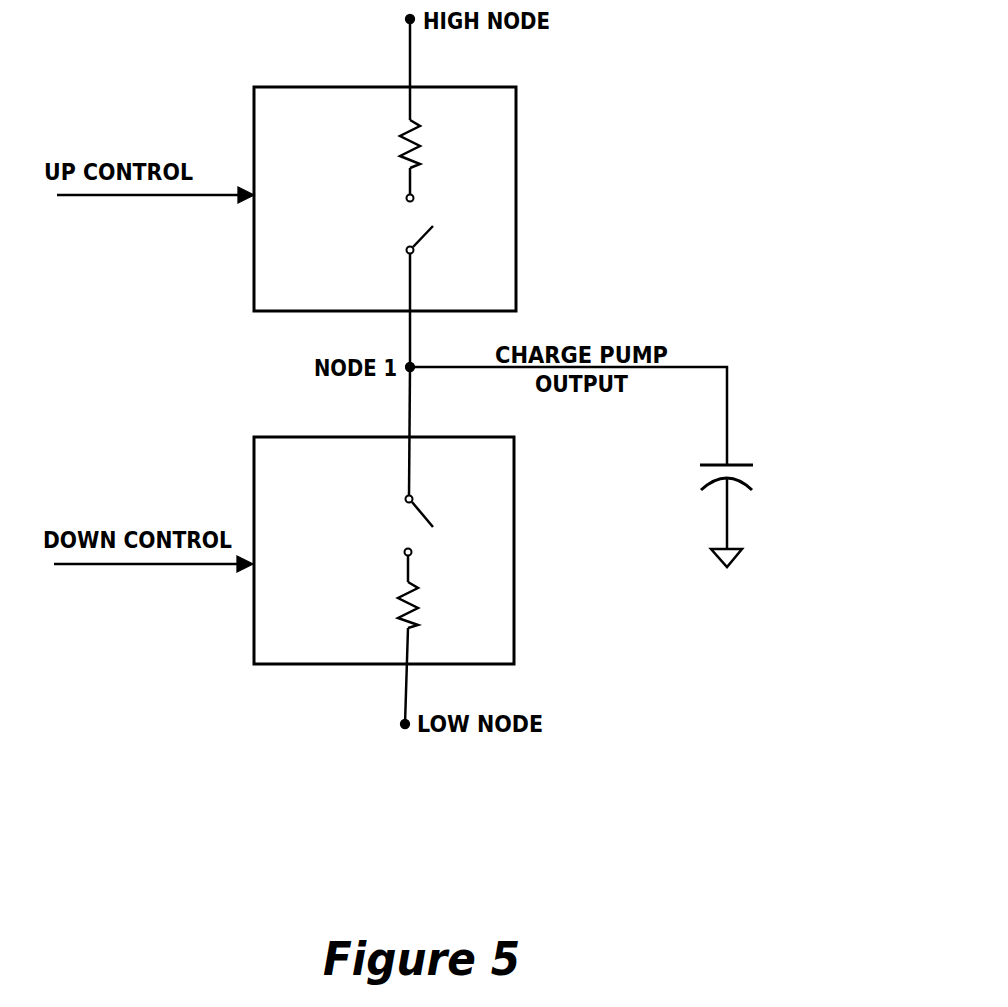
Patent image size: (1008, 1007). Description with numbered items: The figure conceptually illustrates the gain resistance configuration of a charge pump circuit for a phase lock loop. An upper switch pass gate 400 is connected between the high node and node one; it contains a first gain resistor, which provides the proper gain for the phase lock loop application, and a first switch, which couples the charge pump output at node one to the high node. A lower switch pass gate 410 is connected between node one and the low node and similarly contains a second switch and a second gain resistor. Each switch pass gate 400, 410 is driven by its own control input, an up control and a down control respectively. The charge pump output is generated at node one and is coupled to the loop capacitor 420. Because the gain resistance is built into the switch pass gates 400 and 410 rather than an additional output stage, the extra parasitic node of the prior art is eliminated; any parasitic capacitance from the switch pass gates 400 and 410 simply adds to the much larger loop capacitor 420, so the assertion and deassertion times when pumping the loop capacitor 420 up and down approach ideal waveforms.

The switch pass gate 400 is at (527, 146).
The switch pass gate 410 is at (522, 543).
The loop capacitor 420 is at (756, 476).